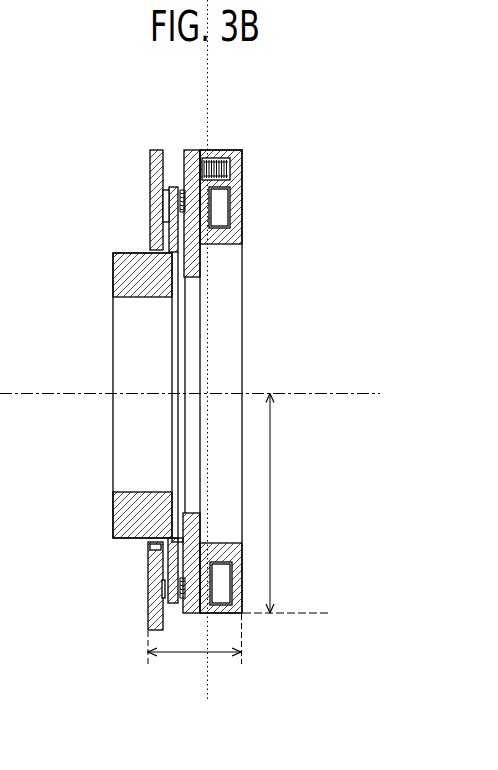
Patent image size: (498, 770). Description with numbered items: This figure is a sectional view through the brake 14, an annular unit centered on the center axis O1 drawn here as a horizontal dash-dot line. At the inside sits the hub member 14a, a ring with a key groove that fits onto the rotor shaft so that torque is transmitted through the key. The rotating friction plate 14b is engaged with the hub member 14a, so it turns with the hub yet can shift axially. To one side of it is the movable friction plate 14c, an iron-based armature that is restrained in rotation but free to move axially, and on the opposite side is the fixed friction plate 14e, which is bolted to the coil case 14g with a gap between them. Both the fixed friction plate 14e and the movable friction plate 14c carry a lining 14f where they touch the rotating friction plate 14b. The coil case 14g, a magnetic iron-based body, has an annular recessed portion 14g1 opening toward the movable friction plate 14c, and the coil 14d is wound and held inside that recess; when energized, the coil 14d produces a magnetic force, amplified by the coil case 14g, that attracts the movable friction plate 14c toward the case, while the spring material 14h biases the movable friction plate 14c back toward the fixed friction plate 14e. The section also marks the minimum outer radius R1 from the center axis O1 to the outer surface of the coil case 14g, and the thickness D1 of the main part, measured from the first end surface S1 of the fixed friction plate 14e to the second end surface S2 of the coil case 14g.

The brake 14 is at (299, 113).
The hub member 14a is at (123, 513).
The rotating friction plate 14b is at (167, 218).
The movable friction plate 14c is at (192, 264).
The coil 14d is at (223, 208).
The fixed friction plate 14e is at (151, 213).
The lining 14f is at (160, 208).
The coil case 14g is at (219, 151).
The annular recessed portion 14g1 is at (196, 226).
The spring material 14h is at (190, 156).
The first end surface S1 is at (148, 578).
The second end surface S2 is at (243, 303).
The center axis O1 is at (207, 396).
The minimum outer radius R1 is at (286, 504).
The thickness of the main part D1 is at (195, 648).